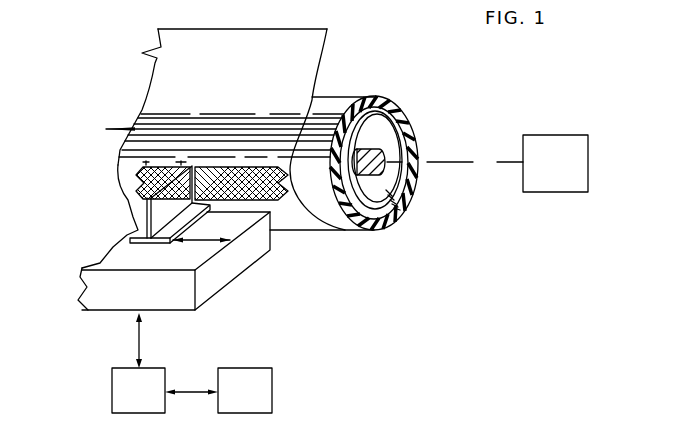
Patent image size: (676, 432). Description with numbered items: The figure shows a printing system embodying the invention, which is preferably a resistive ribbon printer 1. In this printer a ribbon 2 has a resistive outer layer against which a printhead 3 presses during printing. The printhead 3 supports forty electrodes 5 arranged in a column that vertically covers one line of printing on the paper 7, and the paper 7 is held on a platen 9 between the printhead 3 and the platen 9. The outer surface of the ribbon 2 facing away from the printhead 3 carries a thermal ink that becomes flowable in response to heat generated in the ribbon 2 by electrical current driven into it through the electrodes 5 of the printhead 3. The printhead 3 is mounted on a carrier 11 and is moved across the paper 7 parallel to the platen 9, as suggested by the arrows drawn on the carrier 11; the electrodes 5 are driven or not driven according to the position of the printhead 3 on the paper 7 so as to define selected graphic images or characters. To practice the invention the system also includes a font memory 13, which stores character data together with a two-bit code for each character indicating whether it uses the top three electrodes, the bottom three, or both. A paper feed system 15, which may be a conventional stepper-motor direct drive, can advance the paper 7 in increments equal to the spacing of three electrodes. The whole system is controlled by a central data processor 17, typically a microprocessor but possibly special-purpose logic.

The resistive ribbon printer 1 is at (106, 200).
The ribbon 2 is at (133, 183).
The printhead 3 is at (186, 168).
The electrodes 5 is at (193, 176).
The paper 7 is at (323, 42).
The platen 9 is at (330, 98).
The carrier 11 is at (87, 302).
The font memory 13 is at (252, 402).
The paper feed system 15 is at (562, 175).
The central data processor 17 is at (146, 402).